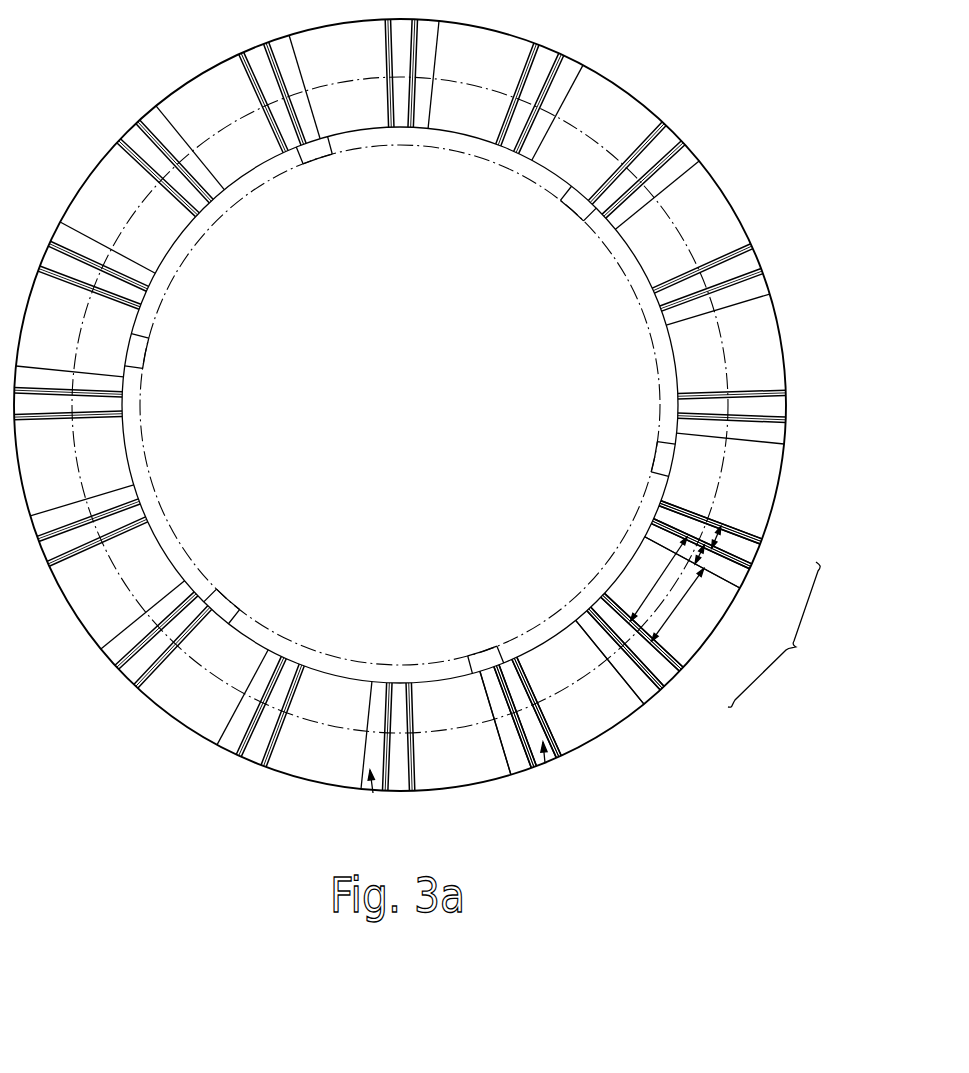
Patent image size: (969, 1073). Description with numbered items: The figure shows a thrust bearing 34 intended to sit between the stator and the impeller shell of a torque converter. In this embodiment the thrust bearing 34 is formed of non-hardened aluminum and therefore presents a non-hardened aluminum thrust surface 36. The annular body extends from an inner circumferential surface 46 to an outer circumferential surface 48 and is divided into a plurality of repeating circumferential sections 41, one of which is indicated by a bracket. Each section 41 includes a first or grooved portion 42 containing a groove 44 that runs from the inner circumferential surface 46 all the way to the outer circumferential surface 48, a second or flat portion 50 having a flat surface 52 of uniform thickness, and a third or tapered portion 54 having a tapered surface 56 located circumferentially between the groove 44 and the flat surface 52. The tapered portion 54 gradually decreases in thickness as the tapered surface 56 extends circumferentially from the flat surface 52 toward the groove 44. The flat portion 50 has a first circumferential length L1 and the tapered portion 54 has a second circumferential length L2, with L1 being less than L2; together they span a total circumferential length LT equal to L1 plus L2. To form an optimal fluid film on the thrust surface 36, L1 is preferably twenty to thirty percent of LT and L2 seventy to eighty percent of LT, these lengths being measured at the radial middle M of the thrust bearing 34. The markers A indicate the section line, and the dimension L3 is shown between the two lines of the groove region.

The thrust bearing 34 is at (422, 419).
The thrust surface 36 is at (408, 405).
The radial middle M is at (678, 216).
The grooved portion 42 is at (662, 517).
The groove 44 is at (702, 543).
The flat portion 50 is at (655, 533).
The flat surface 52 is at (625, 647).
The tapered portion 54 is at (630, 570).
The tapered surface 56 is at (516, 716).
The inner circumferential surface 46 is at (563, 652).
The outer circumferential surface 48 is at (608, 738).
The repeating circumferential section 41 is at (779, 634).
The first circumferential length L1 is at (707, 565).
The second circumferential length L2 is at (681, 605).
The slot spacing L3 is at (720, 532).
The total circumferential length LT is at (652, 579).
The section line A- A is at (460, 780).